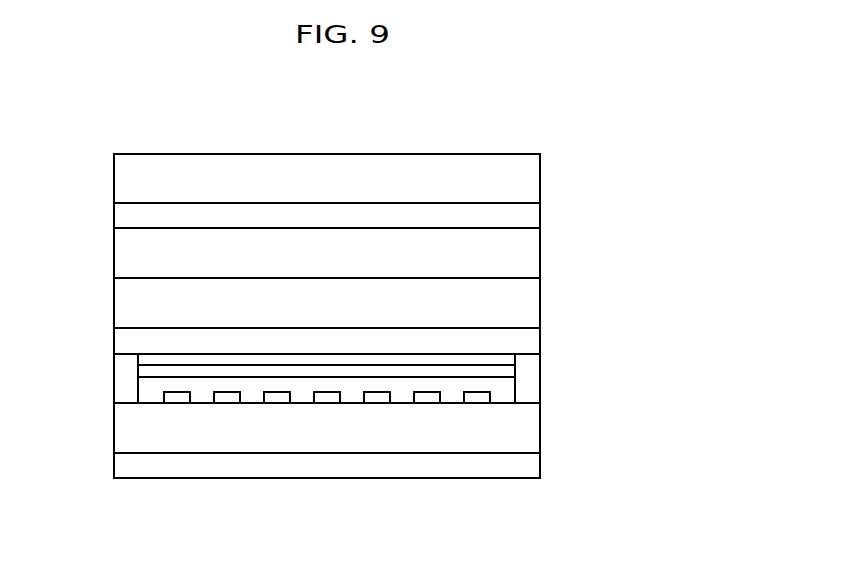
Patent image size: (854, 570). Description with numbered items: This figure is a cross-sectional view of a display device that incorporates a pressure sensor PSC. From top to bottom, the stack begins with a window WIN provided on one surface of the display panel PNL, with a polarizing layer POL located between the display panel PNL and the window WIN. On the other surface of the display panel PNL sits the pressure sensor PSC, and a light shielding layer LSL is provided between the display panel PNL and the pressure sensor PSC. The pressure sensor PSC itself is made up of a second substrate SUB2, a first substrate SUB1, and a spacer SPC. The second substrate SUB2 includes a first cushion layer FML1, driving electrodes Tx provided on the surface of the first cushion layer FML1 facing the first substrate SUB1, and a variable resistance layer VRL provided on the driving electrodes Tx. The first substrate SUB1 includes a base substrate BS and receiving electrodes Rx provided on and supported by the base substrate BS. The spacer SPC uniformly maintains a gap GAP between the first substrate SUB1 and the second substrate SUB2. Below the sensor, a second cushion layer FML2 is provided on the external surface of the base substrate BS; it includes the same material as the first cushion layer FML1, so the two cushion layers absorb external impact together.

The window WIN is at (530, 178).
The polarizing layer POL is at (530, 218).
The display panel PNL is at (530, 253).
The light shielding layer LSL is at (530, 289).
The first cushion layer FML1 is at (525, 343).
The second substrate SUB2 is at (357, 358).
The gap GAP is at (157, 388).
The driving electrodes Tx is at (505, 360).
The variable resistance layer VRL is at (505, 372).
The spacer SPC is at (530, 386).
The first substrate SUB1 is at (397, 430).
The receiving electrodes Rx is at (483, 398).
The base substrate BS is at (527, 442).
The second cushion layer FML2 is at (517, 469).
The pressure sensor PSC is at (682, 327).